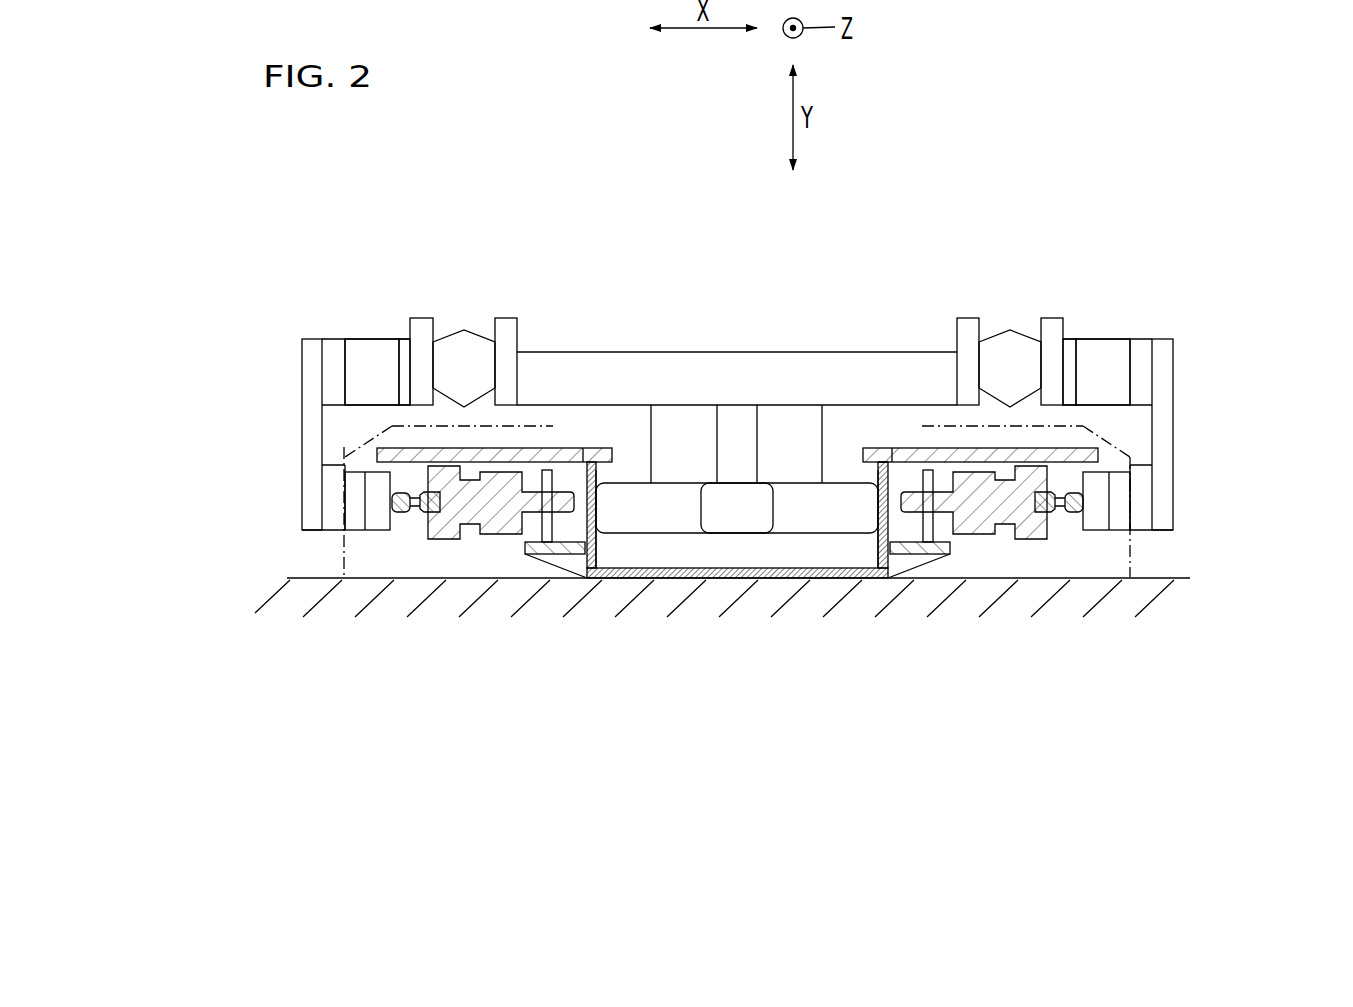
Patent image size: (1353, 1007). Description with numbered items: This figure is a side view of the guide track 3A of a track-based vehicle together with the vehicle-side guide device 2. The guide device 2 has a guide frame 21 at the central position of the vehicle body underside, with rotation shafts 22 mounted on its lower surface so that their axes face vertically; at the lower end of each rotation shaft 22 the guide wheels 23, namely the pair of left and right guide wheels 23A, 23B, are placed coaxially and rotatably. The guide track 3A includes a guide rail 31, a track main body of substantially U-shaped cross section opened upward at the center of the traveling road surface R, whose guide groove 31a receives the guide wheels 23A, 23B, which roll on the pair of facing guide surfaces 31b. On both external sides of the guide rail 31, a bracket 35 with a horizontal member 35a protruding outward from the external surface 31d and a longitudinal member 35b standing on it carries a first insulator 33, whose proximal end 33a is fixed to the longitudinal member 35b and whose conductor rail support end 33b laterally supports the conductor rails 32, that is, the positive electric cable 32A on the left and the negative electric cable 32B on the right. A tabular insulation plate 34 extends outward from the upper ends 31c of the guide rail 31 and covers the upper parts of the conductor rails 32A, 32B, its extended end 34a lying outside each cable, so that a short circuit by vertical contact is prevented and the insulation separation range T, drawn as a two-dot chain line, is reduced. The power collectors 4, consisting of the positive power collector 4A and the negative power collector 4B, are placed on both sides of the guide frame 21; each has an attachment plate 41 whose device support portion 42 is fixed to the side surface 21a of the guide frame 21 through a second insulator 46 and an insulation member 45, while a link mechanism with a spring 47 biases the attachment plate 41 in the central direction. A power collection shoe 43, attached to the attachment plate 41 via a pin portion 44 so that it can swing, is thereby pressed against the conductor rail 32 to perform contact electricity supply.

The guide device 2 is at (742, 352).
The guide track 3A is at (882, 582).
The power collector 4 is at (737, 434).
The positive power collector 4A is at (300, 378).
The negative power collector 4B is at (1175, 377).
The guide frame 21 is at (762, 352).
The side surface of guide frame 21a is at (482, 333).
The rotation shaft 22 is at (713, 437).
The guide wheel 23 is at (667, 697).
The guide wheel 23A is at (800, 537).
The guide wheel 23B is at (683, 537).
The guide rail 31 is at (872, 544).
The guide groove 31a is at (602, 551).
The guide surface 31b is at (880, 525).
The upper end of guide rail 31c is at (590, 570).
The external surface of guide rail 31d is at (905, 462).
The conductor rail 32 is at (719, 617).
The positive electric cable 32A is at (400, 514).
The negative electric cable 32B is at (1075, 514).
The first insulator 33 is at (474, 540).
The proximal end 33a is at (546, 470).
The conductor rail support end 33b is at (425, 514).
The insulation plate 34 is at (467, 353).
The extended end 34a is at (372, 450).
The bracket 35 is at (562, 556).
The horizontal member 35a is at (530, 554).
The longitudinal member 35b is at (588, 455).
The attachment plate 41 is at (302, 463).
The device support portion 42 is at (300, 338).
The power collection shoe 43 is at (362, 535).
The pin portion 44 is at (345, 548).
The insulation member 45 is at (411, 322).
The second insulator 46 is at (452, 352).
The link mechanism with spring 47 is at (368, 337).
The traveling road surface R is at (1147, 573).
The insulation separation range T is at (350, 445).